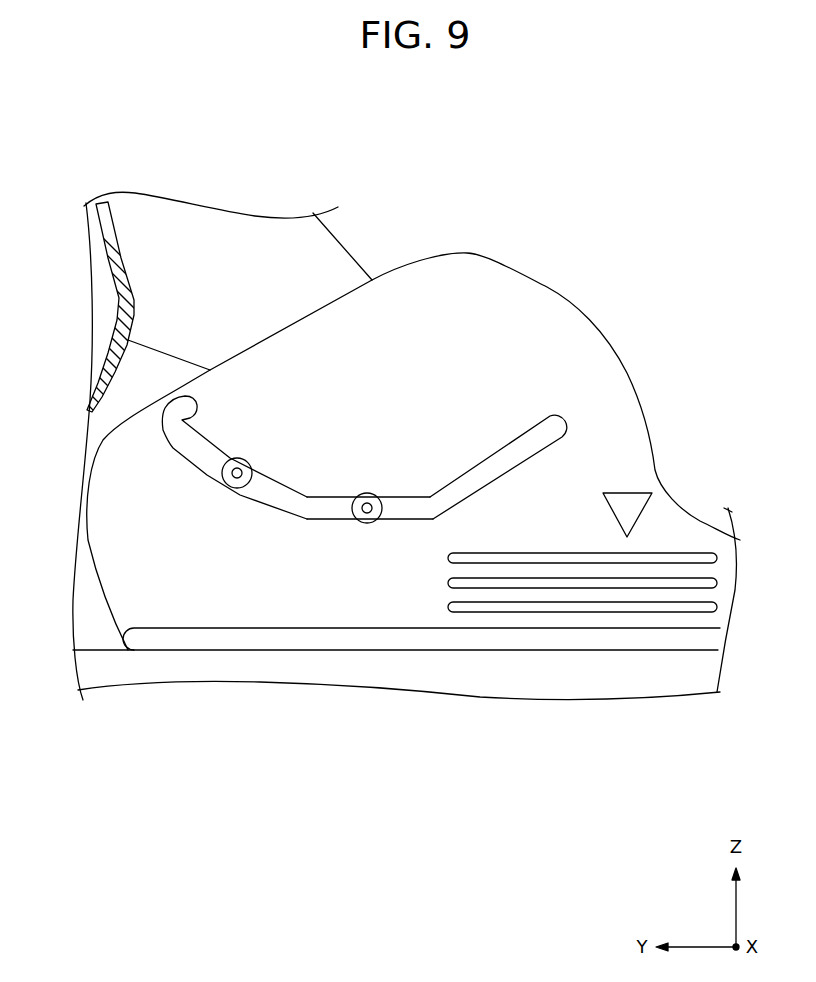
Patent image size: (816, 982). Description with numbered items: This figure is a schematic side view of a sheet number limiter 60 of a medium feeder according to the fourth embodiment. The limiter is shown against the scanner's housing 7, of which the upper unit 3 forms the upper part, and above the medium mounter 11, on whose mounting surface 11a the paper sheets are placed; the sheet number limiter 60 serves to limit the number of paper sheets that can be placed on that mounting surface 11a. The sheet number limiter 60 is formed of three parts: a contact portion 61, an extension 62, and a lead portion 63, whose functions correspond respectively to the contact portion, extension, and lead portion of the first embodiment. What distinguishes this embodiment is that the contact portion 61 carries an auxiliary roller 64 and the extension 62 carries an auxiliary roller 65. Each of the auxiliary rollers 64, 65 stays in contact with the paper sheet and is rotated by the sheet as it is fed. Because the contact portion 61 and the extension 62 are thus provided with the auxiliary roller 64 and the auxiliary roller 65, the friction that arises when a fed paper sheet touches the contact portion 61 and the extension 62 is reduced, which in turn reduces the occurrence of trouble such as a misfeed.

The upper unit 3 is at (142, 273).
The housing 7 is at (121, 240).
The medium mounter 11 is at (530, 670).
The mounting surface 11a is at (228, 648).
The sheet number limiter 60 is at (558, 363).
The contact portion 61 is at (300, 525).
The extension 62 is at (143, 440).
The lead portion 63 is at (450, 523).
The auxiliary roller 64 is at (375, 495).
The auxiliary roller 65 is at (245, 461).